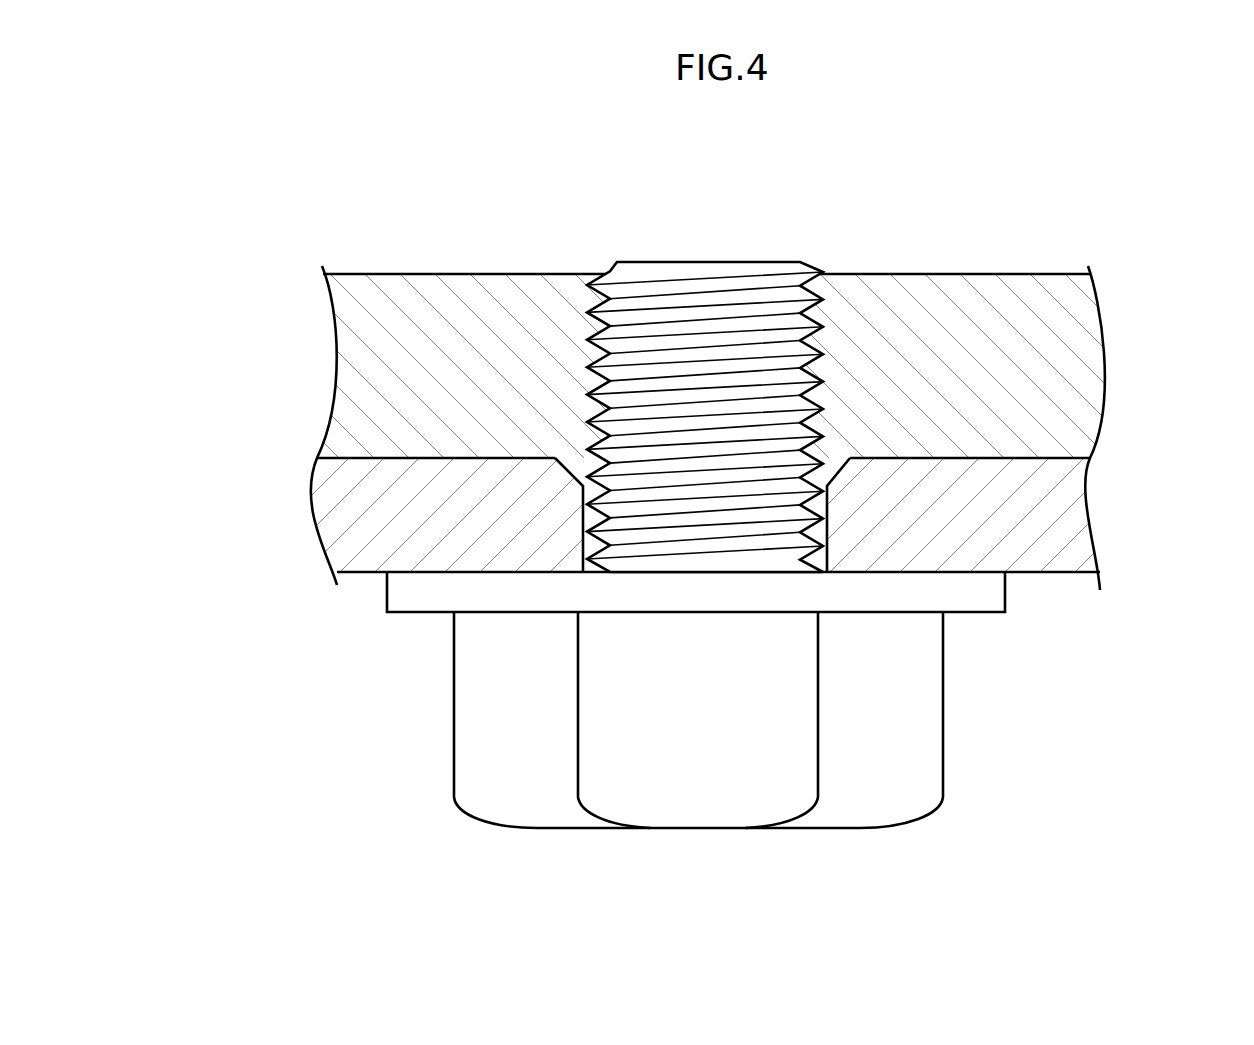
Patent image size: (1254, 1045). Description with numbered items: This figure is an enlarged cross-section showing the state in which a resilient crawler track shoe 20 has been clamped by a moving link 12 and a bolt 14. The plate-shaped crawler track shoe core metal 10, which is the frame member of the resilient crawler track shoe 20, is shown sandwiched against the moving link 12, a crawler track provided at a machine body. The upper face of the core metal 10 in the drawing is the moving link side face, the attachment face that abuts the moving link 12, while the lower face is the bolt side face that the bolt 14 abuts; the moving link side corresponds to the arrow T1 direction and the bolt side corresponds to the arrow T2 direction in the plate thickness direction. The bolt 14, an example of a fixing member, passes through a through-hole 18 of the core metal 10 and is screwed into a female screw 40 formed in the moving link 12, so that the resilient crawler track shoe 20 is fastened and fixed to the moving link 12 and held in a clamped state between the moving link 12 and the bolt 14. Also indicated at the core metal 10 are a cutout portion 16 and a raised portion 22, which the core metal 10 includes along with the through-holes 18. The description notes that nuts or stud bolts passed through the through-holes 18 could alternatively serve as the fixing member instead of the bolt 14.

The crawler track shoe core metal 10 is at (1046, 600).
The moving link 12 is at (925, 275).
The bolt 14 is at (943, 752).
The cutout portion 16 is at (565, 458).
The through-hole 18 is at (588, 542).
The resilient crawler track shoe 20 is at (1086, 648).
The raised portion 22 is at (830, 458).
The female screw 40 is at (803, 300).
The arrow T1 direction T1 is at (1213, 578).
The arrow T2 direction T2 is at (1213, 578).